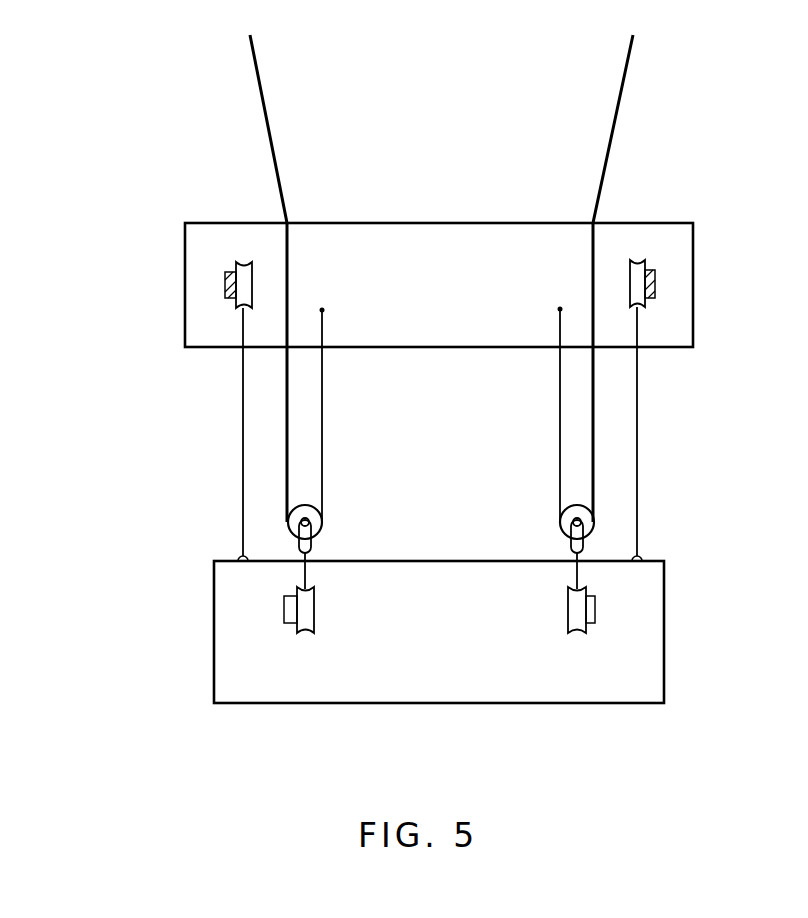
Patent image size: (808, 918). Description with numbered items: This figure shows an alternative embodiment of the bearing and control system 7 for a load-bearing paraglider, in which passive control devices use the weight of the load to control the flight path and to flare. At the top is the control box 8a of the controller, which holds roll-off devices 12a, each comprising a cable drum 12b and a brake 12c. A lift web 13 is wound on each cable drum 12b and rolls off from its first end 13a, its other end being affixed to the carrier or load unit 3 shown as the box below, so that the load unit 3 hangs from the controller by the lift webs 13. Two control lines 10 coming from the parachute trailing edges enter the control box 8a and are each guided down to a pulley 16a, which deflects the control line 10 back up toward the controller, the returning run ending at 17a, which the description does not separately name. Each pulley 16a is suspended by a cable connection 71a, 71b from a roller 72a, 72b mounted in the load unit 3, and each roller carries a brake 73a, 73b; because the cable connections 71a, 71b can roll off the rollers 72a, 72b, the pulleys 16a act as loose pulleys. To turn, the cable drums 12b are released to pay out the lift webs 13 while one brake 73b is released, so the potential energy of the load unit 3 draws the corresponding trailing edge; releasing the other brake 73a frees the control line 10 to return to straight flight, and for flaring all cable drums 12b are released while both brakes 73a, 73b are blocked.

The load unit 3 is at (655, 636).
The bearing and control system 7 is at (698, 364).
The control box 8a is at (432, 232).
The control line 10 is at (258, 70).
The roll-off device 12a is at (204, 286).
The cable drum 12b is at (243, 262).
The brake 12c is at (225, 270).
The lift web 13 is at (243, 471).
The first end of lift web 13a is at (268, 295).
The pulley 16a is at (323, 521).
The rope end fixing rod 17a is at (323, 312).
The cable connection 71a is at (312, 572).
The cable connection 71b is at (568, 572).
The roller 72a is at (314, 626).
The roller 72b is at (566, 628).
The brake 73a is at (284, 613).
The brake 73b is at (590, 630).